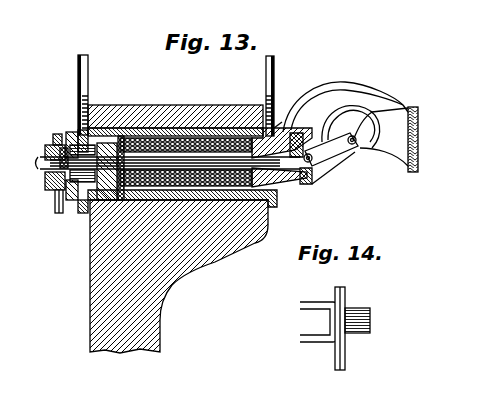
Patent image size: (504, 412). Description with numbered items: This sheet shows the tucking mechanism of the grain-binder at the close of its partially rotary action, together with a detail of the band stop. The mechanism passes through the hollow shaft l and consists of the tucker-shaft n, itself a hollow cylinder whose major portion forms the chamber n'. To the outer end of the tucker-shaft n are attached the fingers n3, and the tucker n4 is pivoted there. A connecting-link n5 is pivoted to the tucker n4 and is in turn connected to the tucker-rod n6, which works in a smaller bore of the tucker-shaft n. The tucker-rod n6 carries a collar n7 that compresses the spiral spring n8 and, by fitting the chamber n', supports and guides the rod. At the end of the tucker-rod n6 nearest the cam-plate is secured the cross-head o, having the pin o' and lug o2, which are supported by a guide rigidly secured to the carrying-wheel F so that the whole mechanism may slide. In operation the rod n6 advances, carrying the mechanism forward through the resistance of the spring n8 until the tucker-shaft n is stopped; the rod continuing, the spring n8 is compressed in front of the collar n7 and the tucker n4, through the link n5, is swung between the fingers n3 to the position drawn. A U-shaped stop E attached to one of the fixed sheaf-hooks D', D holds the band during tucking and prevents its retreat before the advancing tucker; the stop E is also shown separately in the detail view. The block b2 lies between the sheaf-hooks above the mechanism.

In FIG. 13, the fixed sheaf-hook D' is at (90, 95).
In FIG. 13, the sheaf-hook D is at (275, 96).
In FIG. 13, the hollow shaft l is at (279, 119).
In FIG. 13, the block b2 is at (125, 104).
In FIG. 13, the spiral spring n8 is at (166, 127).
In FIG. 13, the chamber n' is at (186, 119).
In FIG. 13, the tucker-rod n6 is at (44, 150).
In FIG. 13, the lug o2 is at (59, 133).
In FIG. 13, the cross-head o is at (47, 181).
In FIG. 13, the pin o' is at (50, 201).
In FIG. 13, the tucker-shaft n is at (191, 198).
In FIG. 13, the collar n7 is at (82, 213).
In FIG. 13, the carrying-wheel F is at (179, 276).
In FIG. 13, the tucker n4 is at (360, 88).
In FIG. 13, the fingers n3 is at (351, 127).
In FIG. 13, the U-shaped stop E is at (385, 138).
In FIG. 14, the U-shaped stop E is at (335, 328).
In FIG. 13, the connecting-link n5 is at (335, 160).